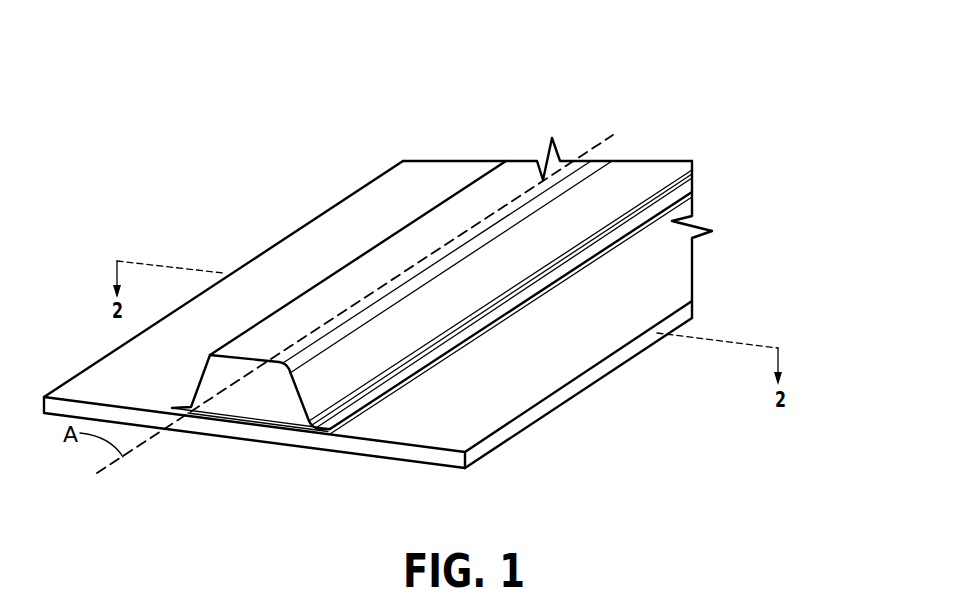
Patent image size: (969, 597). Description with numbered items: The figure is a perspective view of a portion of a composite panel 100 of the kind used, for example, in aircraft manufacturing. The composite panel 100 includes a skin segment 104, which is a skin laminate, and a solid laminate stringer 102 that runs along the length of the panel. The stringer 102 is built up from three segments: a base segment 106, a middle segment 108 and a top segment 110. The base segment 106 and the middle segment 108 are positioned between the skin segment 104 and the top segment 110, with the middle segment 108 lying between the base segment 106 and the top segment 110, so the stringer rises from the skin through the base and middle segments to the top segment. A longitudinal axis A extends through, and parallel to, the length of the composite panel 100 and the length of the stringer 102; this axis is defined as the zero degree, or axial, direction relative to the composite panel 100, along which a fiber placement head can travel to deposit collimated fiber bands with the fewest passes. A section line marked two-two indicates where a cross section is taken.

The composite panel 100 is at (120, 34).
The solid laminate stringer 102 is at (840, 47).
The skin segment 104 is at (433, 455).
The base segment 106 is at (222, 420).
The middle segment 108 is at (275, 402).
The top segment 110 is at (390, 257).